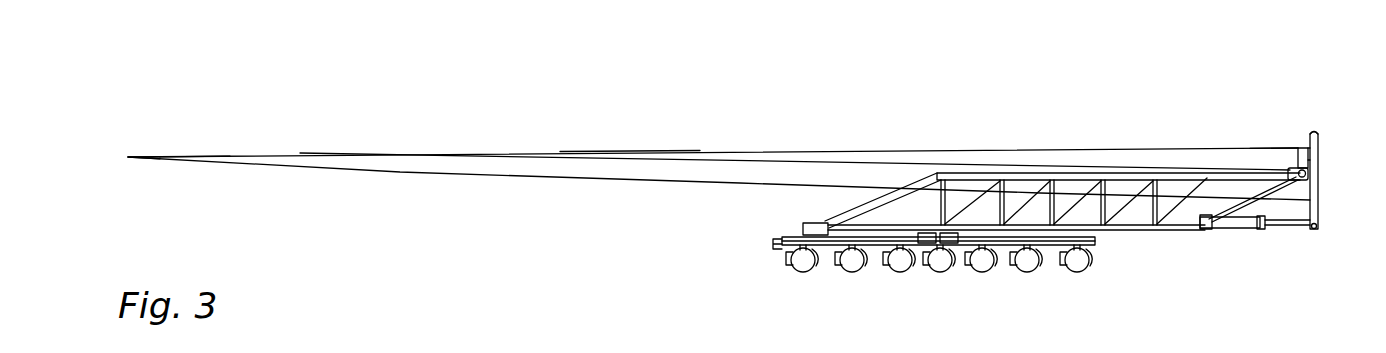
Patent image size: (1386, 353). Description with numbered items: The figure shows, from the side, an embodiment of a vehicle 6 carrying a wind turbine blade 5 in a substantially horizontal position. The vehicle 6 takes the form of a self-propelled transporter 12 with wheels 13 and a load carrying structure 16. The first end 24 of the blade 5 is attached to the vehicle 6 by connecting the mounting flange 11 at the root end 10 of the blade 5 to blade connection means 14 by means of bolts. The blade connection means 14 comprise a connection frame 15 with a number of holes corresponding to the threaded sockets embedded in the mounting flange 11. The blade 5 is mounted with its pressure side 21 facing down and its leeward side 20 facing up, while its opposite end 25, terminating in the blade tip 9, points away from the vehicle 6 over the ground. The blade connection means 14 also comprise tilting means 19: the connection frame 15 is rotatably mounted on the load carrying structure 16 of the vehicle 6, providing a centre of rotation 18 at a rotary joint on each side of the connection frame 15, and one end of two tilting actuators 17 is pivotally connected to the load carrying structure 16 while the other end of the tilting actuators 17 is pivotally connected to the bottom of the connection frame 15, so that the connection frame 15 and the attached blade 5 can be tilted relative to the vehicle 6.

The wind turbine blade 5 is at (423, 163).
The vehicle 6 is at (942, 293).
The blade tip 9 is at (128, 157).
The root end 10 is at (1296, 147).
The mounting flange 11 is at (1316, 150).
The self-propelled transporter 12 is at (1052, 246).
The wheels 13 is at (981, 259).
The blade connection means 14 is at (1321, 210).
The connection frame 15 is at (1315, 134).
The load carrying structure 16 is at (1127, 230).
The tilting actuators 17 is at (1240, 229).
The centre of rotation 18 is at (1308, 176).
The tilting means 19 is at (1300, 231).
The leeward side 20 is at (614, 150).
The pressure side 21 is at (592, 182).
The first end 24 is at (1288, 146).
The opposite end 25 is at (165, 148).